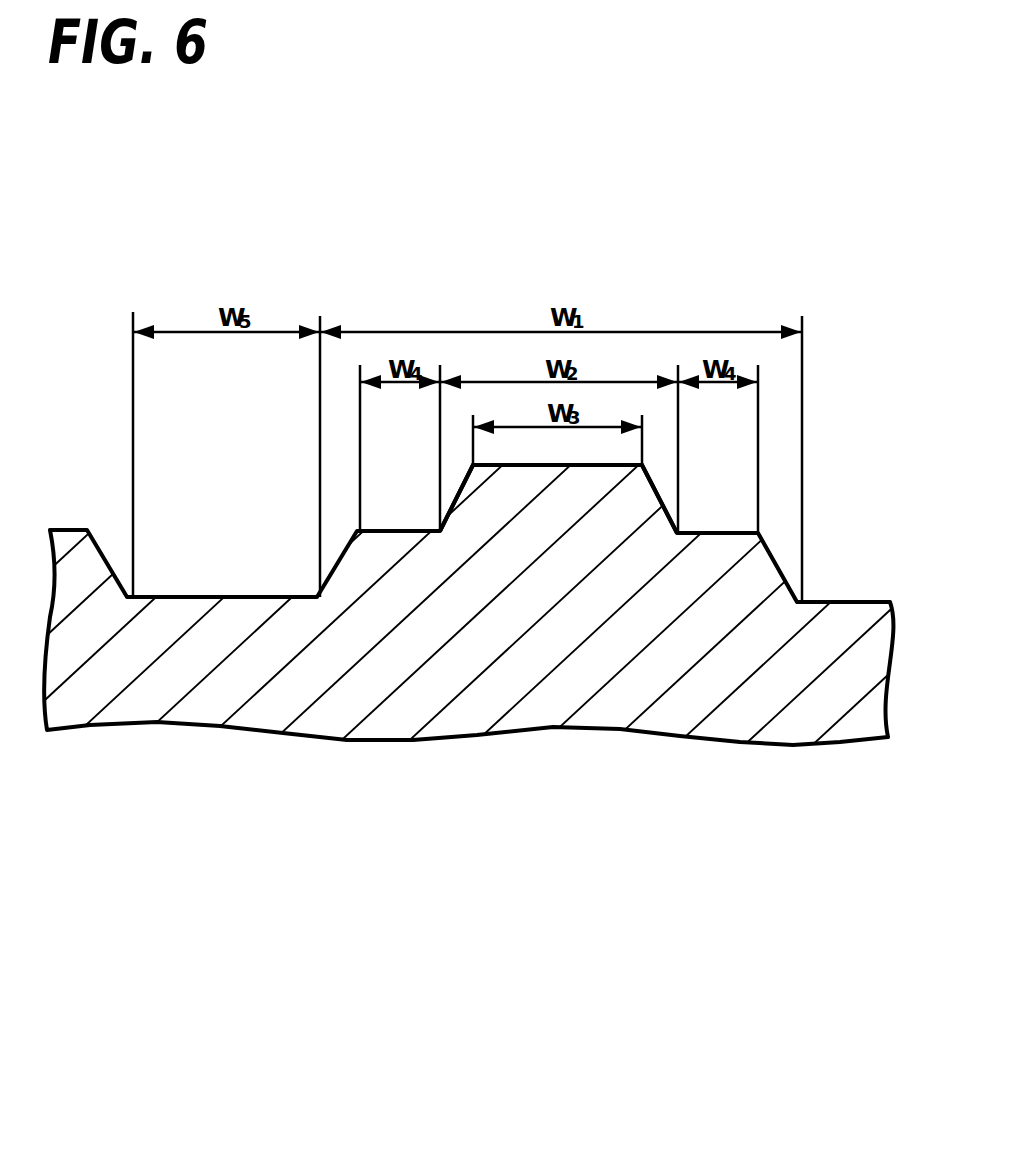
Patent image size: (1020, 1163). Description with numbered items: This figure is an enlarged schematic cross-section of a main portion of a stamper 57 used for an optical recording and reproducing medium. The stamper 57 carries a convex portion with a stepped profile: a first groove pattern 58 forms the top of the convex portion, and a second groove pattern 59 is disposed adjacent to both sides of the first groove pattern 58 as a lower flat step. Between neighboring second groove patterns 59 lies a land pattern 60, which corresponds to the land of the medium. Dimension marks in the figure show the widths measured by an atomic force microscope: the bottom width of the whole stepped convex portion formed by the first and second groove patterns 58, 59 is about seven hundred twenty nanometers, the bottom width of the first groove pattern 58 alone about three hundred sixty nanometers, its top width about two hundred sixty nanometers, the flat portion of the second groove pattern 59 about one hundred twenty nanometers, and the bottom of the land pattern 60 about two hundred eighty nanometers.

The stamper 57 is at (623, 688).
The first groove pattern 58 is at (545, 465).
The second groove pattern 59 is at (390, 531).
The land pattern 60 is at (168, 597).